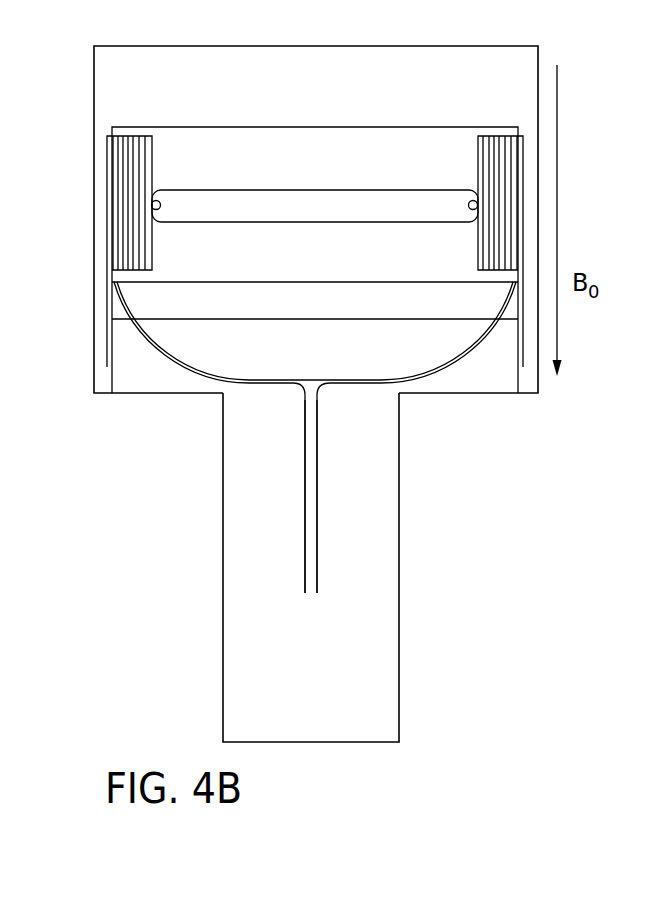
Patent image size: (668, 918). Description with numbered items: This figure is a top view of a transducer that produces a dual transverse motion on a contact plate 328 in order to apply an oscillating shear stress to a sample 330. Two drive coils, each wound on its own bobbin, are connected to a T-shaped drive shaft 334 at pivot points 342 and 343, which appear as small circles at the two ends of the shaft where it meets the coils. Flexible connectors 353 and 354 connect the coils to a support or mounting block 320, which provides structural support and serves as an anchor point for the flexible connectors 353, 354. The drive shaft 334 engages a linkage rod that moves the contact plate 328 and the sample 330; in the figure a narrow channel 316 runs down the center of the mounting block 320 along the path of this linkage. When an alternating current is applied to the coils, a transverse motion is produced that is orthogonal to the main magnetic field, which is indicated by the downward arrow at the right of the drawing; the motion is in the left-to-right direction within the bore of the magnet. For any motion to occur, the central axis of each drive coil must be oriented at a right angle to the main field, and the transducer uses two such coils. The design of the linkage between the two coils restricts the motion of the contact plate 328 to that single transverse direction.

The sample 330 is at (538, 47).
The contact plate 328 is at (329, 261).
The flexible connector 353 is at (107, 193).
The flexible connector 354 is at (523, 196).
The T-shaped drive shaft 334 is at (250, 208).
The pivot point 342 is at (159, 201).
The pivot point 343 is at (469, 203).
The channel 316 is at (317, 545).
The support or mounting block 320 is at (399, 653).